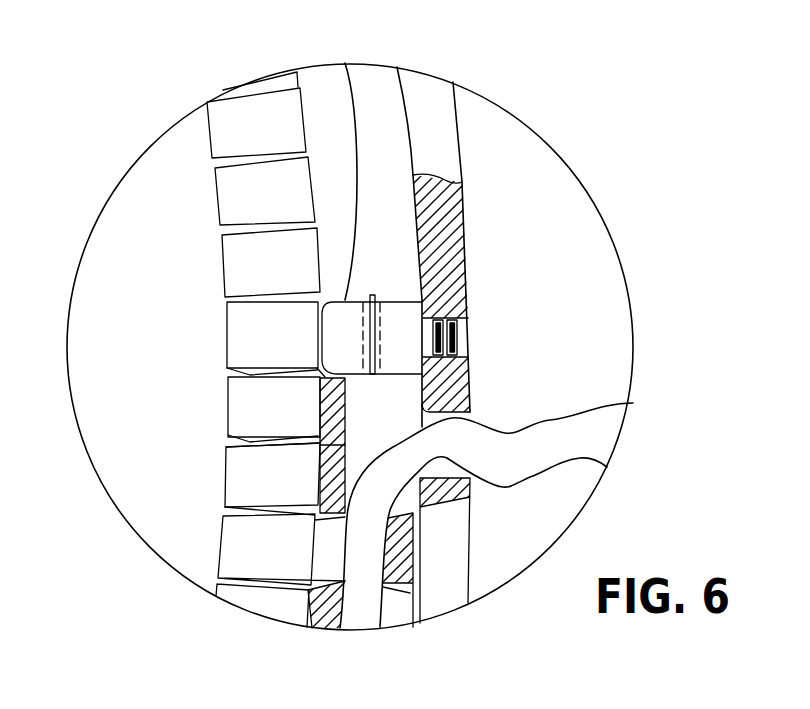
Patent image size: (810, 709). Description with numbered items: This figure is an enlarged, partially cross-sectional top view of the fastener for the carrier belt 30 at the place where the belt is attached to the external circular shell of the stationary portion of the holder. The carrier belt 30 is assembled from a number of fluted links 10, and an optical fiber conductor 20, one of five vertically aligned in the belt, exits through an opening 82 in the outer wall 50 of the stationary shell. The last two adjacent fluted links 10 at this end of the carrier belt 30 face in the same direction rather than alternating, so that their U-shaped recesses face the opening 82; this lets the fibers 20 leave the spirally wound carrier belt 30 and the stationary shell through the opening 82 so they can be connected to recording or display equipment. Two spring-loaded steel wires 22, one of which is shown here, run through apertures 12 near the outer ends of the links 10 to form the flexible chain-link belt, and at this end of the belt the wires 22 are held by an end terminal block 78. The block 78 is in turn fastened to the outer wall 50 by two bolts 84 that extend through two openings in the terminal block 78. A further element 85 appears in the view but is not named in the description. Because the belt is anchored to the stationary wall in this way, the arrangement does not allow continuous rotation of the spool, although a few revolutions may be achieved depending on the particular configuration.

The teeth 10 is at (233, 267).
The pawl 12 is at (362, 323).
The cable 20 is at (565, 408).
The housing wall 22 is at (373, 327).
The rack assembly 30 is at (192, 357).
The outer sheath 50 is at (468, 236).
The tube 78 is at (345, 63).
The lead 82 is at (474, 416).
The window 84 is at (463, 321).
The spring strip 85 is at (370, 333).